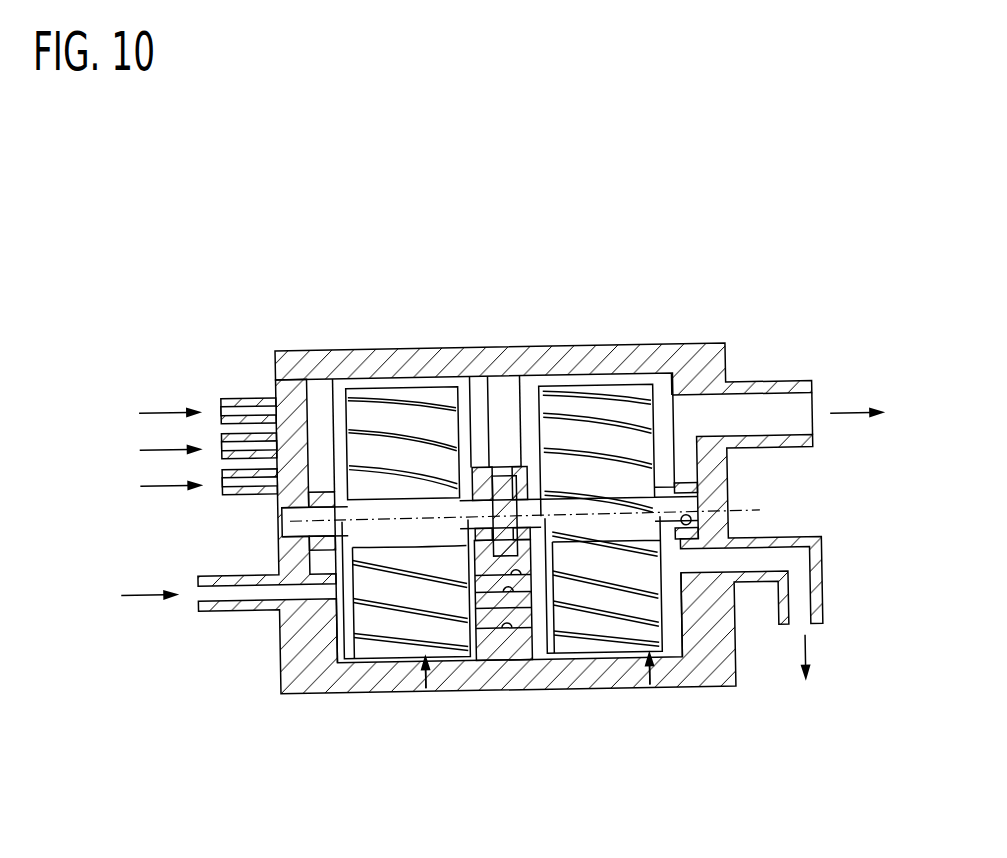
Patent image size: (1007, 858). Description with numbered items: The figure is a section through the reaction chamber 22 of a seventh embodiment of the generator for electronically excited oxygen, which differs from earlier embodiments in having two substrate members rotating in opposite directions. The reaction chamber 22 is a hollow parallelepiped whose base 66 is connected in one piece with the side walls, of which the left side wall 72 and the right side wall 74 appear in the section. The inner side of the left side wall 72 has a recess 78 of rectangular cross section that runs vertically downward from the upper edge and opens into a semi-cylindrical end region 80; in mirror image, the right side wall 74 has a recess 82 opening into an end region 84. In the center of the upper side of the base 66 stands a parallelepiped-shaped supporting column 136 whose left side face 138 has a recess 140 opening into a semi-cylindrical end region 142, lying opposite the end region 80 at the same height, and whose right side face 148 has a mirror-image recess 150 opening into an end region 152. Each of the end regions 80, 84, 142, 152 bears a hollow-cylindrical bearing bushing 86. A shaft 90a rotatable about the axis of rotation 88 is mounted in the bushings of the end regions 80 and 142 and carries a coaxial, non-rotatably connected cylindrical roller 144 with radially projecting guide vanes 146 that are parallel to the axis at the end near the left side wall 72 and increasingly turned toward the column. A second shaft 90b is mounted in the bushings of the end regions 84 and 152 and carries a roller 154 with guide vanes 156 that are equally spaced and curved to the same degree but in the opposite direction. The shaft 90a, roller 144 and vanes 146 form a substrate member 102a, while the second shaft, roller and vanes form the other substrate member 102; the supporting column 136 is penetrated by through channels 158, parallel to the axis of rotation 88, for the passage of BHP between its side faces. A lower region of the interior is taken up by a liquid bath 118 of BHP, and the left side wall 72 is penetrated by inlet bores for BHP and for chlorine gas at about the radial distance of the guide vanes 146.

The reaction chamber 22 is at (741, 677).
The base 66 is at (720, 690).
The left side wall 72 is at (286, 519).
The right side wall 74 is at (722, 533).
The recess 78 is at (307, 404).
The end region 80 is at (310, 494).
The recess 82 is at (685, 382).
The end region 84 is at (697, 532).
The bearing bushing 86 is at (462, 495).
The axis of rotation 88 is at (697, 497).
The shaft 90a is at (333, 690).
The shaft 90b is at (674, 522).
The substrate member 102 is at (646, 690).
The substrate member 102a is at (420, 690).
The liquid bath 118 is at (551, 658).
The supporting column 136 is at (518, 668).
The left side face 138 is at (472, 665).
The recess 140 is at (473, 380).
The end region 142 is at (500, 467).
The cylindrical roller 144 is at (358, 386).
The guide vanes 146 is at (390, 603).
The right side face 148 is at (530, 622).
The recess 150 is at (524, 380).
The end region 152 is at (562, 390).
The cylindrical roller 154 is at (622, 388).
The guide vanes 156 is at (616, 625).
The through channels 158 is at (514, 572).